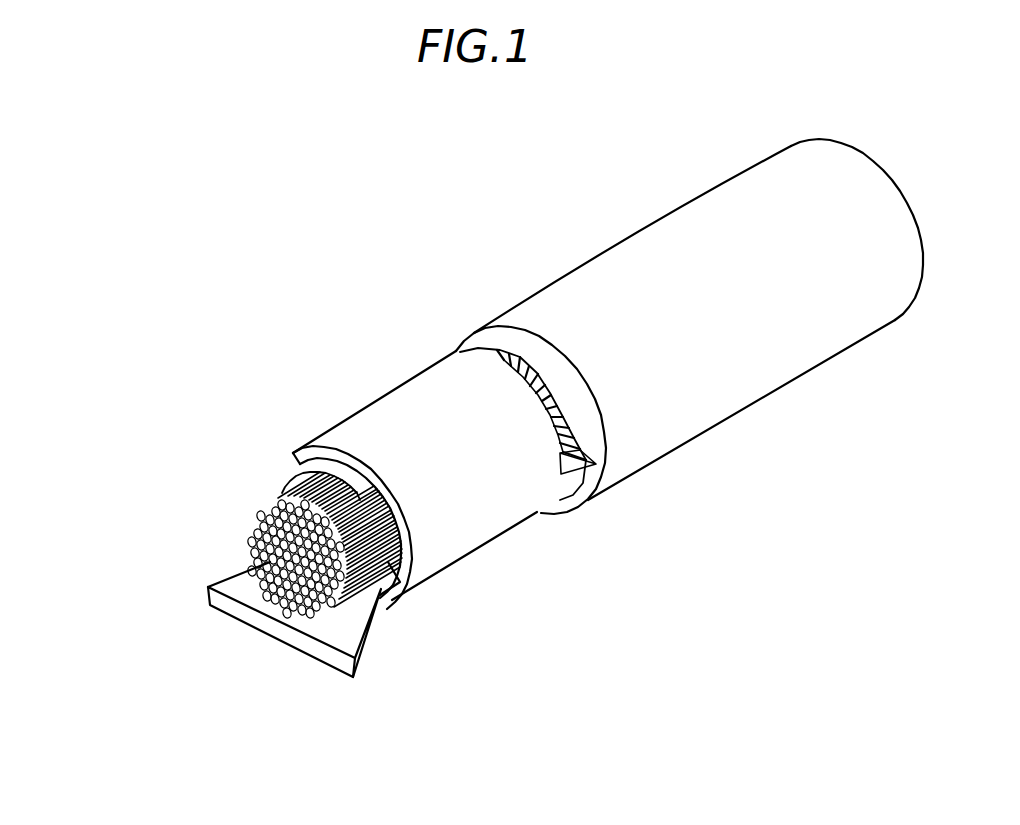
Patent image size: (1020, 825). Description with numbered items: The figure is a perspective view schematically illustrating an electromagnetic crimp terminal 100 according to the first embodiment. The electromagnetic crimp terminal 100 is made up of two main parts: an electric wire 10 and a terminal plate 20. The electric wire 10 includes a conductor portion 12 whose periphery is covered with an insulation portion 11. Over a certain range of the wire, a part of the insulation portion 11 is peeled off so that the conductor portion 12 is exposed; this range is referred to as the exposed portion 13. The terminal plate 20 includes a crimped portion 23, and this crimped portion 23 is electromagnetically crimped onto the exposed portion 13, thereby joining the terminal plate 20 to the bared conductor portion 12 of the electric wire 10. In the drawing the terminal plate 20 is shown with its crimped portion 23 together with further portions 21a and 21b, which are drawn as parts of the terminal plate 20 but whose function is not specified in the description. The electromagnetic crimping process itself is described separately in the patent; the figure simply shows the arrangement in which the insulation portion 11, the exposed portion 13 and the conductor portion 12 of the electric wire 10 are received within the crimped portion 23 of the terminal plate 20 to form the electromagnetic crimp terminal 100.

The electromagnetic crimp terminal 100 is at (350, 245).
The electric wire 10 is at (803, 507).
The insulation portion 11 is at (677, 400).
The exposed portion 13 is at (387, 563).
The conductor portion 12 is at (284, 605).
The terminal plate 20 is at (95, 293).
The crimped portion 23 is at (428, 422).
The insulation layer 21b is at (367, 481).
The conductor strands 21a is at (300, 452).